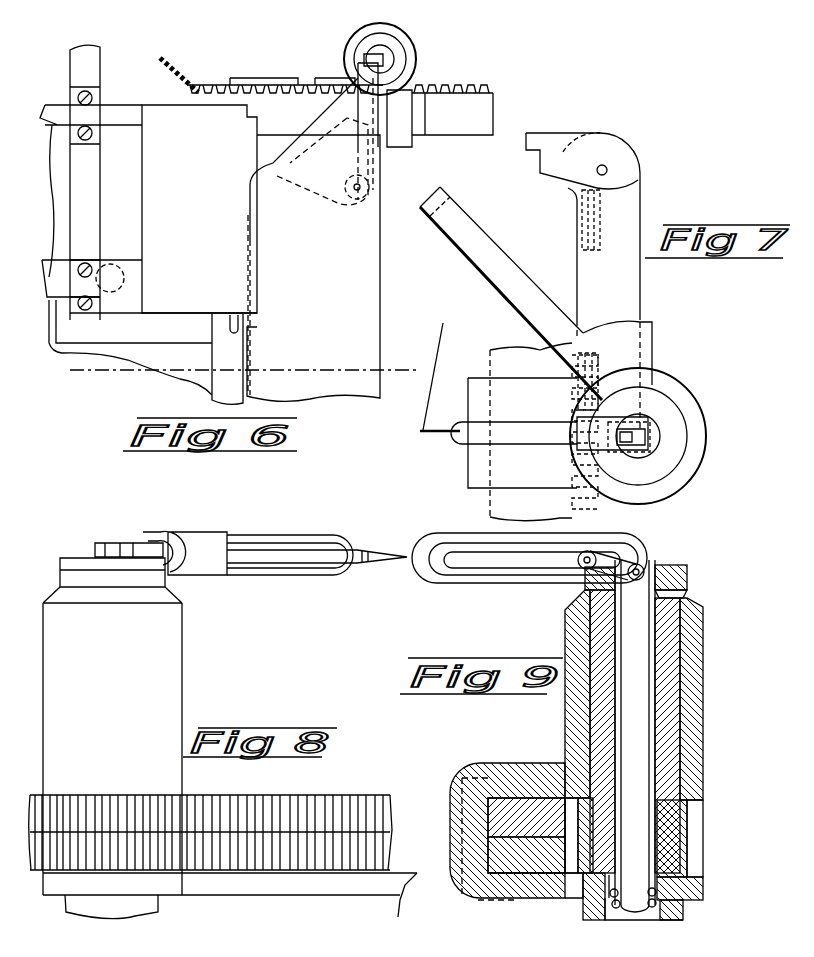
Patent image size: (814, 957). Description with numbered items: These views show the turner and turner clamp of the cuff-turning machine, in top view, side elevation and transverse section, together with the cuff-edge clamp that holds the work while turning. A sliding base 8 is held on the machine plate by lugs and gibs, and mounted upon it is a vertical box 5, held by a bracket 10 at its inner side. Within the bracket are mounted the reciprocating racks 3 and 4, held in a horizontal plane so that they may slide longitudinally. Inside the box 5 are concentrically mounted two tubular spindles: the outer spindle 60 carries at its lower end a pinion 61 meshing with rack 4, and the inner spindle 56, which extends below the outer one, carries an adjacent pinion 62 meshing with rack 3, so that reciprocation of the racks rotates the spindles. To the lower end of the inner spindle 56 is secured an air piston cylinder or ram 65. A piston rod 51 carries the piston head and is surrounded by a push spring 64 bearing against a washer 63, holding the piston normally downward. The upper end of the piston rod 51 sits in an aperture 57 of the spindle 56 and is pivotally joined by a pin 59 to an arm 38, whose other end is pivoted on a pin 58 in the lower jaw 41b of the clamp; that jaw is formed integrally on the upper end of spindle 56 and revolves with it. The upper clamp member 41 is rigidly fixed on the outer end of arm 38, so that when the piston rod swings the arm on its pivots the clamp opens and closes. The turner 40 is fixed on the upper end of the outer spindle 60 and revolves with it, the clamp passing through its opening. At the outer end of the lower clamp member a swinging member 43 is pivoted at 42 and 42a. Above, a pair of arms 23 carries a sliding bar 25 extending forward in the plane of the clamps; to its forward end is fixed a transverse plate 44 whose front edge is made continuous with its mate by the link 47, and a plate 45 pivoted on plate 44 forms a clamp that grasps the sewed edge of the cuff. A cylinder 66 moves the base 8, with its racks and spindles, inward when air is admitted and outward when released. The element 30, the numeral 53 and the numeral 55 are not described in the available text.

In FIG. 6, the reciprocating rack 3 is at (487, 105).
In FIG. 8, the reciprocating rack 3 is at (377, 862).
In FIG. 9, the reciprocating rack 3 is at (500, 850).
In FIG. 6, the reciprocating rack 4 is at (427, 103).
In FIG. 7, the reciprocating rack 4 is at (517, 344).
In FIG. 8, the reciprocating rack 4 is at (243, 802).
In FIG. 9, the reciprocating rack 4 is at (490, 807).
In FIG. 6, the vertical box 5 is at (413, 50).
In FIG. 7, the vertical box 5 is at (683, 397).
In FIG. 8, the vertical box 5 is at (172, 668).
In FIG. 9, the vertical box 5 is at (705, 687).
In FIG. 8, the sliding base 8 is at (308, 888).
In FIG. 9, the sliding base 8 is at (563, 888).
In FIG. 7, the bracket 10 is at (472, 463).
In FIG. 9, the bracket 10 is at (520, 765).
In FIG. 6, the arms 23 is at (88, 63).
In FIG. 6, the sliding bar 25 is at (118, 117).
In FIG. 6, the chain 30 is at (163, 62).
In FIG. 7, the arm 38 is at (650, 450).
In FIG. 8, the arm 38 is at (97, 547).
In FIG. 9, the arm 38 is at (590, 578).
In FIG. 6, the turner 40 is at (347, 118).
In FIG. 7, the turner 40 is at (472, 250).
In FIG. 8, the turner 40 is at (300, 534).
In FIG. 9, the turner 40 is at (512, 578).
In FIG. 6, the upper clamp member 41 is at (370, 68).
In FIG. 7, the upper clamp member 41 is at (627, 282).
In FIG. 8, the upper clamp member 41 is at (333, 552).
In FIG. 9, the upper clamp member 41 is at (605, 552).
In FIG. 7, the lower jaw 41b is at (640, 172).
In FIG. 8, the lower jaw 41b is at (337, 562).
In FIG. 9, the lower jaw 41b is at (647, 563).
In FIG. 8, the pivot 42 is at (393, 553).
In FIG. 7, the pivot 42a is at (607, 170).
In FIG. 7, the swinging member 43 is at (527, 142).
In FIG. 6, the plate 44 is at (188, 127).
In FIG. 6, the plate 45 is at (163, 297).
In FIG. 6, the link 47 is at (223, 373).
In FIG. 7, the piston rod 51 is at (647, 437).
In FIG. 8, the piston rod 51 is at (113, 543).
In FIG. 9, the piston rod 51 is at (638, 750).
In FIG. 6, the housing body 53 is at (380, 320).
In FIG. 6, the pivot 55 is at (377, 198).
In FIG. 7, the pivot 55 is at (630, 145).
In FIG. 7, the inner spindle 56 is at (590, 228).
In FIG. 8, the inner spindle 56 is at (177, 575).
In FIG. 9, the inner spindle 56 is at (690, 585).
In FIG. 7, the aperture 57 is at (653, 428).
In FIG. 9, the pin 58 is at (580, 570).
In FIG. 9, the pin 59 is at (690, 566).
In FIG. 8, the outer spindle 60 is at (158, 577).
In FIG. 9, the outer spindle 60 is at (700, 613).
In FIG. 8, the pinion 61 is at (140, 810).
In FIG. 9, the pinion 61 is at (687, 817).
In FIG. 8, the pinion 62 is at (138, 864).
In FIG. 9, the pinion 62 is at (690, 866).
In FIG. 9, the washer 63 is at (663, 883).
In FIG. 9, the push spring 64 is at (693, 895).
In FIG. 9, the air piston cylinder 65 is at (683, 913).
In FIG. 8, the cylinder 66 is at (67, 883).